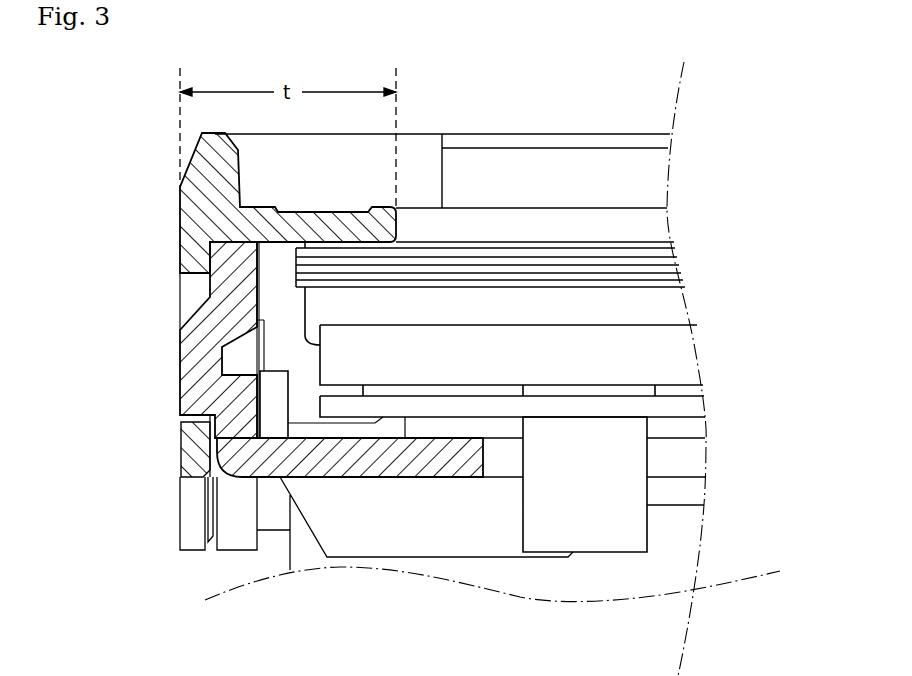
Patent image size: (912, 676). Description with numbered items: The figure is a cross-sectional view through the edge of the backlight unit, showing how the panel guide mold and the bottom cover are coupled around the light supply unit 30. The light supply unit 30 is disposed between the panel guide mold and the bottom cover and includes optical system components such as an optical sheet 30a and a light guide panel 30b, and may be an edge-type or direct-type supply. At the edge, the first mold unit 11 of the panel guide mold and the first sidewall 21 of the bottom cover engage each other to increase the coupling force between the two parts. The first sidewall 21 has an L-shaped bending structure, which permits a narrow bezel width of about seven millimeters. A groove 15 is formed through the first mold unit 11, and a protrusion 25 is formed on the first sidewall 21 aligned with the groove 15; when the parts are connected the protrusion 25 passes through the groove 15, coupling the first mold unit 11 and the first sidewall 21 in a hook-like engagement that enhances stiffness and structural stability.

The first mold unit 11 is at (193, 220).
The groove 15 is at (178, 307).
The first sidewall 21 is at (225, 458).
The protrusion 25 is at (190, 378).
The light supply unit 30 is at (550, 329).
The optical sheet 30a is at (697, 250).
The light guide panel 30b is at (687, 352).